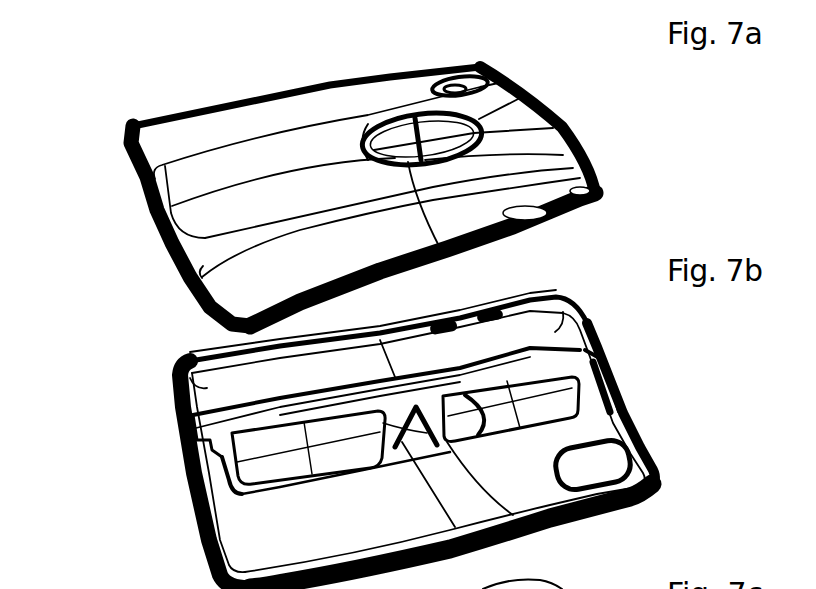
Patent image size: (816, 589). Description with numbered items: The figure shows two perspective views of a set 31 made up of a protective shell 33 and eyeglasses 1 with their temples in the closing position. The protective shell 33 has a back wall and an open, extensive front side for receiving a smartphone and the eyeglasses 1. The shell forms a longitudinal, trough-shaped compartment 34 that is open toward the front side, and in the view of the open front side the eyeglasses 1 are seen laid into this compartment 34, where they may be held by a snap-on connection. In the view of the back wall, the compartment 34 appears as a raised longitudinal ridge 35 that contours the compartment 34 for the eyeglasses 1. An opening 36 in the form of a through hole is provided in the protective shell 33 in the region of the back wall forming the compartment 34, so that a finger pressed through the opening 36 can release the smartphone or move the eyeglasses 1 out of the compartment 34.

In FIG. 7A, the eyeglasses 1 is at (413, 135).
In FIG. 7B, the eyeglasses 1 is at (178, 453).
In FIG. 7A, the set 31 is at (126, 130).
In FIG. 7A, the protective shell 33 is at (234, 110).
In FIG. 7B, the protective shell 33 is at (253, 542).
In FIG. 7B, the compartment 34 is at (217, 482).
In FIG. 7A, the raised longitudinal ridge 35 is at (218, 173).
In FIG. 7A, the opening 36 is at (368, 126).
In FIG. 7B, the opening 36 is at (535, 522).